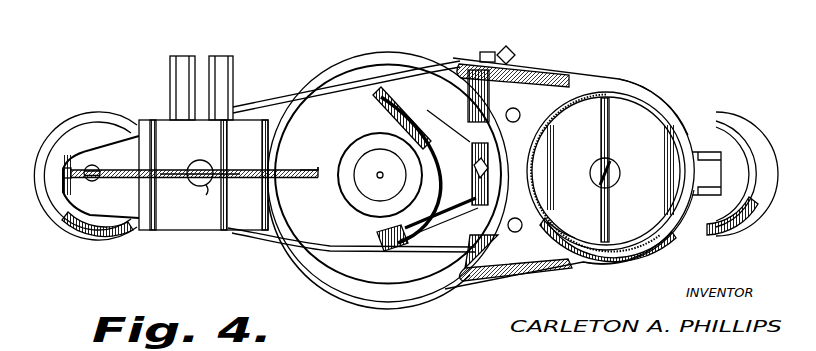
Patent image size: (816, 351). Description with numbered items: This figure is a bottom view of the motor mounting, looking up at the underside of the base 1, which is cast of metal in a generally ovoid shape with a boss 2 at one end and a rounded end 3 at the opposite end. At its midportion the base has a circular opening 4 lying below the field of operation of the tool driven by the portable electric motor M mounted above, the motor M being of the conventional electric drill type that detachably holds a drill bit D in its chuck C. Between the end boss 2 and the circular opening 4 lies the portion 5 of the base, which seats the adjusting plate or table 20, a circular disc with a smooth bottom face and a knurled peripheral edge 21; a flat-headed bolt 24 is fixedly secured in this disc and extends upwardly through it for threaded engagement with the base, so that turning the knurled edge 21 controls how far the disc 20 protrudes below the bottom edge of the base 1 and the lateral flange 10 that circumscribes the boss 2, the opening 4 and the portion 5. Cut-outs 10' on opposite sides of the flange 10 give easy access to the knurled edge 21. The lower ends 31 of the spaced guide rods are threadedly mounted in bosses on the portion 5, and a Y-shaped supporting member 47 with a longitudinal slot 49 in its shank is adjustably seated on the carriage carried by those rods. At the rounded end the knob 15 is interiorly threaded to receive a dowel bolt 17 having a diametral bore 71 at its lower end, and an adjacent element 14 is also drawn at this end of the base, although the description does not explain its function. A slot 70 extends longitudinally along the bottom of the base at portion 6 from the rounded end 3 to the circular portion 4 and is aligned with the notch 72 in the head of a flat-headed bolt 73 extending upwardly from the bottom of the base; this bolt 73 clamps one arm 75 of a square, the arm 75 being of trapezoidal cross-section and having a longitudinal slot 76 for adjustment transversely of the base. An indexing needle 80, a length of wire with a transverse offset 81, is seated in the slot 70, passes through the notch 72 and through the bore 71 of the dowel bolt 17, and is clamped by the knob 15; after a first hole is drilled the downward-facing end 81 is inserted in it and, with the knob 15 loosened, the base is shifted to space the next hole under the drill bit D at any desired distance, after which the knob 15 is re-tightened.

The base 1 is at (394, 53).
The boss 2 is at (712, 180).
The rounded end 3 is at (72, 197).
The circular opening 4 is at (367, 275).
The portion of the base 5 is at (549, 105).
The portion of the base 6 is at (153, 224).
The lateral flange 10 is at (514, 167).
The cut-outs 10' is at (638, 169).
The knob 14 is at (733, 127).
The knob 15 is at (70, 124).
The dowel bolt 17 is at (99, 170).
The adjusting plate 20 is at (622, 110).
The knurled peripheral edge 21 is at (558, 237).
The flat-headed bolt 24 is at (621, 170).
The lower ends of guide rods 31 is at (515, 123).
The Y-shaped supporting member 47 is at (471, 141).
The longitudinal slot 49 is at (476, 183).
The slot 70 is at (168, 171).
The diametral bore 71 is at (107, 178).
The notch 72 is at (201, 187).
The flat-headed bolt 73 is at (201, 161).
The arm of the square 75 is at (183, 89).
The longitudinal slot 76 is at (205, 68).
The indexing needle 80 is at (296, 171).
The transverse offset 81 is at (318, 172).
The chuck C is at (368, 147).
The drill bit D is at (378, 177).
The portable electric motor M is at (258, 108).